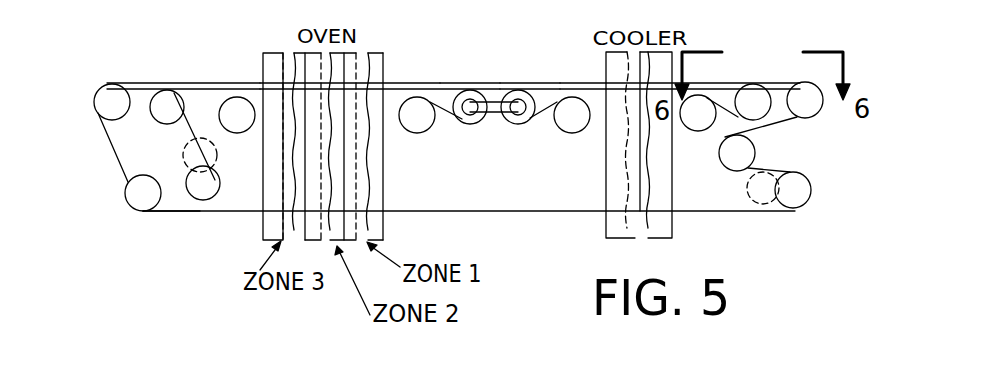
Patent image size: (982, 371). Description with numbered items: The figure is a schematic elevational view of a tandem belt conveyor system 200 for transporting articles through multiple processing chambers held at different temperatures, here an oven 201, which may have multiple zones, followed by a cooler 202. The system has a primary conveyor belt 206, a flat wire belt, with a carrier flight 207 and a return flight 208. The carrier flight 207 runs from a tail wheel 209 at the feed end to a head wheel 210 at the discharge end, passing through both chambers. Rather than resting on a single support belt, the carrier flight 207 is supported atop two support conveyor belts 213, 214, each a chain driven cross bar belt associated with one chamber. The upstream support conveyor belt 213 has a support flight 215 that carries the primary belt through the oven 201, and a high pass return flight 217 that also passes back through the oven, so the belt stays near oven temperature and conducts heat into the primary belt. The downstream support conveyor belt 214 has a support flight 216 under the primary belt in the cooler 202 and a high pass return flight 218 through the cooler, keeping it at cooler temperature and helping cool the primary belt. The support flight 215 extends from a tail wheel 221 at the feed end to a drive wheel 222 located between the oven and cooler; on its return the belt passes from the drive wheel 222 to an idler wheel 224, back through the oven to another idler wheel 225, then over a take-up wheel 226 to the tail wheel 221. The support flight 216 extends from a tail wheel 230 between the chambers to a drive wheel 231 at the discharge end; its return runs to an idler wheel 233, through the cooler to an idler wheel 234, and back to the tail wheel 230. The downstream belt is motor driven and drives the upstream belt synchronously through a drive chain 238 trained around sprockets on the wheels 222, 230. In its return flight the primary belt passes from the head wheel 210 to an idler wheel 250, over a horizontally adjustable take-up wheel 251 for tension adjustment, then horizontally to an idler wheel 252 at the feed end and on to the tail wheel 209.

The tandem belt conveyor system 200 is at (122, 222).
The oven 201 is at (255, 224).
The cooler 202 is at (682, 238).
The primary conveyor belt 206 is at (108, 166).
The carrier flight 207 is at (565, 83).
The return flight 208 is at (513, 212).
The tail wheel 209 is at (95, 122).
The head wheel 210 is at (785, 119).
The upstream support conveyor belt 213 is at (158, 155).
The downstream support conveyor belt 214 is at (545, 76).
The support flight 215 is at (213, 83).
The support flight 216 is at (583, 83).
The high pass return flight 217 is at (258, 83).
The high pass return flight 218 is at (595, 125).
The tail wheel 221 is at (163, 79).
The drive wheel 222 is at (480, 125).
The idler wheel 224 is at (410, 133).
The idler wheel 225 is at (240, 134).
The take-up wheel 226 is at (211, 203).
The tail wheel 230 is at (507, 120).
The drive wheel 231 is at (735, 85).
The idler wheel 233 is at (698, 132).
The idler wheel 234 is at (548, 128).
The drive chain 238 is at (493, 82).
The idler wheel 250 is at (755, 153).
The take-up wheel 251 is at (802, 207).
The idler wheel 252 is at (127, 179).